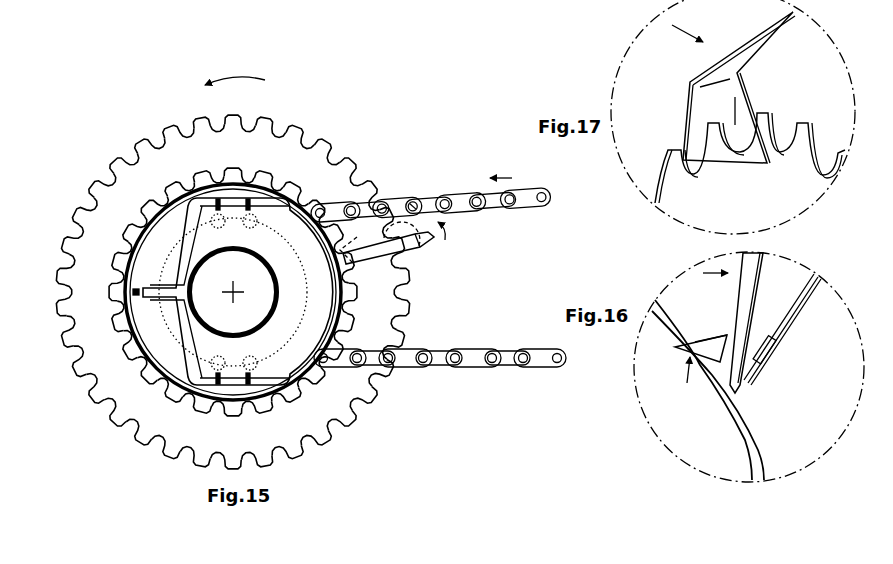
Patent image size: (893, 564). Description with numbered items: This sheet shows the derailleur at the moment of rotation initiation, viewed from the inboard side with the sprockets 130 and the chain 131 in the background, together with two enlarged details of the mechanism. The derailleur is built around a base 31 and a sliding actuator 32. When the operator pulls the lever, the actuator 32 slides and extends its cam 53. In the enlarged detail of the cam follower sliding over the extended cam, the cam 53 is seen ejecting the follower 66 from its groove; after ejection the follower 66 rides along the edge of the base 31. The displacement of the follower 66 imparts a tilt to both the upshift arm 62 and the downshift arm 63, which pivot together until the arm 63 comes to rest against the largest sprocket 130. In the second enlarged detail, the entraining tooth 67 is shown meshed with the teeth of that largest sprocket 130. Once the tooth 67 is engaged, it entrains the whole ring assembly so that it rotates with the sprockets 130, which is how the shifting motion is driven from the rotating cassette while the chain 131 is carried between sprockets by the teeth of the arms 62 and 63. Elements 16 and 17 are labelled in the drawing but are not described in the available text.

In FIG. 15, the sprockets 130 is at (150, 132).
In FIG. 17, the sprockets 130 is at (672, 157).
In FIG. 15, the chain 131 is at (455, 205).
In FIG. 15, the pawl 16 is at (357, 237).
In FIG. 15, the pawl spring 17 is at (383, 233).
In FIG. 15, the base 31 is at (157, 237).
In FIG. 15, the actuator 32 is at (237, 190).
In FIG. 15, the cam 53 is at (310, 233).
In FIG. 16, the cam 53 is at (743, 428).
In FIG. 15, the upshift arm 62 is at (408, 252).
In FIG. 16, the upshift arm 62 is at (742, 312).
In FIG. 16, the downshift arm 63 is at (808, 315).
In FIG. 16, the follower 66 is at (712, 350).
In FIG. 17, the tooth 67 is at (747, 120).